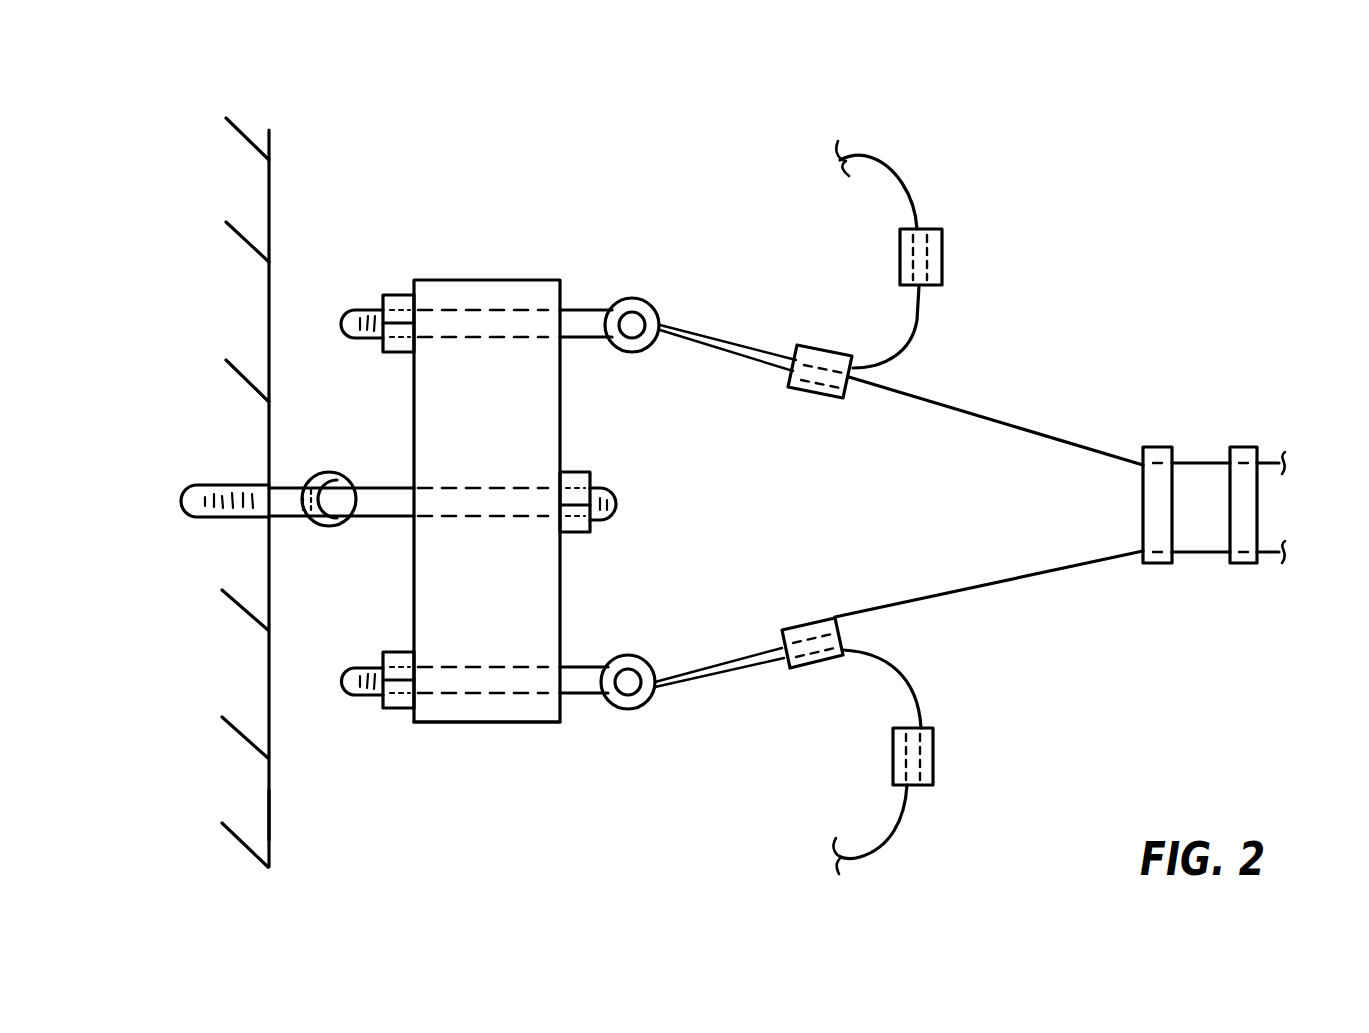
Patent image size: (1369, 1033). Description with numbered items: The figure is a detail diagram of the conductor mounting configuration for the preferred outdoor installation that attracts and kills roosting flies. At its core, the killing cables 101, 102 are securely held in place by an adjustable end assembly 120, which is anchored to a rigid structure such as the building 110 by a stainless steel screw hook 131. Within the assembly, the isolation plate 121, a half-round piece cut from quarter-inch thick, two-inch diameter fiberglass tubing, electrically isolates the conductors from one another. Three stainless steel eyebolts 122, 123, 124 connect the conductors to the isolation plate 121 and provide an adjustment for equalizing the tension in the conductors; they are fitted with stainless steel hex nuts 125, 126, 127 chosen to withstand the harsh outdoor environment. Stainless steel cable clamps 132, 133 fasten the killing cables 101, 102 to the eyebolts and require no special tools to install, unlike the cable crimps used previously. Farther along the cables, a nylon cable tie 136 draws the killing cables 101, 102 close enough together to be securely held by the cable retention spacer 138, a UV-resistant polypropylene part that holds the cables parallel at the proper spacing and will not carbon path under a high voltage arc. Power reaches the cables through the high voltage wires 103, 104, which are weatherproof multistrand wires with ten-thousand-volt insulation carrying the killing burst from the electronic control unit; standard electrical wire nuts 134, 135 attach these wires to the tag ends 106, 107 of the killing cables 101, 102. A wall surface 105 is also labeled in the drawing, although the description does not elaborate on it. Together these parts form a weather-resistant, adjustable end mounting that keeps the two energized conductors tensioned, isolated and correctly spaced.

The killing cable 101 is at (1055, 437).
The killing cable 102 is at (1108, 562).
The high voltage wire 103 is at (872, 160).
The high voltage wire 104 is at (883, 838).
The wall 105 is at (269, 812).
The tag end 106 is at (1032, 303).
The tag end 107 is at (998, 633).
The building 110 is at (248, 183).
The adjustable end assembly 120 is at (487, 450).
The isolation plate 121 is at (522, 725).
The eyebolt 122 is at (382, 520).
The eyebolt 123 is at (652, 690).
The eyebolt 124 is at (637, 297).
The hex nut 125 is at (660, 437).
The hex nut 126 is at (394, 710).
The hex nut 127 is at (394, 294).
The screw hook 131 is at (252, 520).
The cable clamp 132 is at (828, 350).
The cable clamp 133 is at (812, 630).
The wire nut 134 is at (942, 262).
The wire nut 135 is at (933, 752).
The nylon cable tie 136 is at (1157, 447).
The cable retention spacer 138 is at (1245, 447).